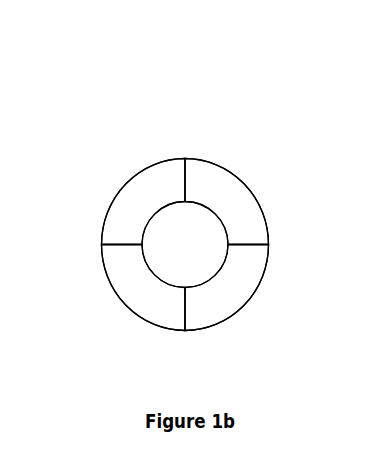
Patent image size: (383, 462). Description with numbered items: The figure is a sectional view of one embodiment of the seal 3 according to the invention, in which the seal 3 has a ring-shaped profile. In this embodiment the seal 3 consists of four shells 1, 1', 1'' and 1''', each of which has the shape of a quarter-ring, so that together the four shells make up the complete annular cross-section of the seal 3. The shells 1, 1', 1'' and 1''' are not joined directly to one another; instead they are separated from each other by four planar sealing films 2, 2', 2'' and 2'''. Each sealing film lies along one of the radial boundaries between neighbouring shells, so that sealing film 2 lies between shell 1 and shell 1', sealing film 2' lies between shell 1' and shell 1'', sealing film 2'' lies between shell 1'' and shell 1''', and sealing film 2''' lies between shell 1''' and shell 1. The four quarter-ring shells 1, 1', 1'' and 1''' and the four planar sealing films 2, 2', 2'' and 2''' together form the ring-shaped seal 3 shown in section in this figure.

The shell 1 is at (135, 185).
The shell 1' is at (236, 193).
The shell 1'' is at (252, 296).
The shell 1''' is at (121, 306).
The planar sealing film 2 is at (163, 155).
The planar sealing film 2' is at (280, 216).
The planar sealing film 2'' is at (164, 336).
The planar sealing film 2''' is at (94, 209).
The seal 3 is at (247, 84).